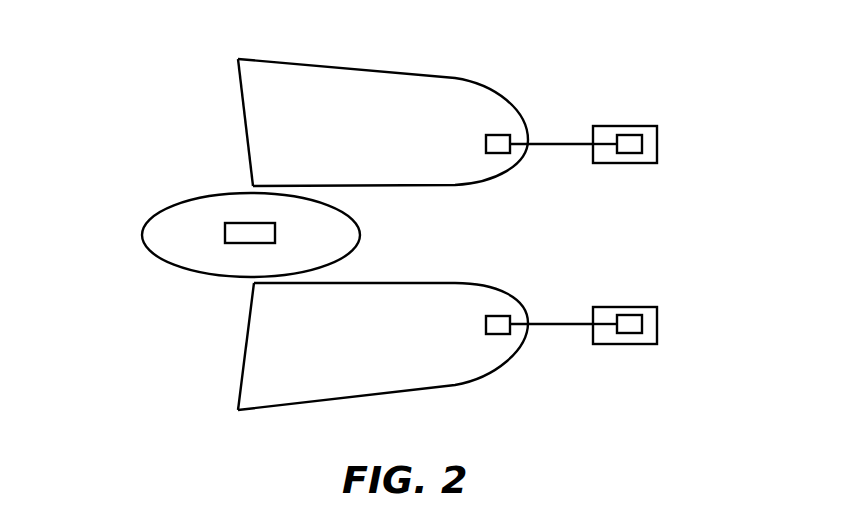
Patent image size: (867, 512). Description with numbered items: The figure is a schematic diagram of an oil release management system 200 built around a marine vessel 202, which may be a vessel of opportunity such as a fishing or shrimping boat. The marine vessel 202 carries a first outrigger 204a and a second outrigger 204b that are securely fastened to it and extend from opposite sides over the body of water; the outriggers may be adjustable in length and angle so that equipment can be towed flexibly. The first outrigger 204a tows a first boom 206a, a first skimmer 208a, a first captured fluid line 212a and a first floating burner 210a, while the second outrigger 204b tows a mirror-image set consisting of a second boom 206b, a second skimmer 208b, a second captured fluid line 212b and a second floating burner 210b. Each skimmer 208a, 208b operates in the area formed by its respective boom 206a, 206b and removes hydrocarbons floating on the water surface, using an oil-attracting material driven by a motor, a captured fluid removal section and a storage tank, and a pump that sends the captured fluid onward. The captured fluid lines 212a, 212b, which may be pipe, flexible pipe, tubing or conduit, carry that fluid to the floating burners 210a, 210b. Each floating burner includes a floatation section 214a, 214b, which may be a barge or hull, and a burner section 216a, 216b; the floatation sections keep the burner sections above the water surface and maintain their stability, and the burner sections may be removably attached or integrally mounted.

The oil release management system 200 is at (126, 31).
The marine vessel 202 is at (164, 212).
The first outrigger 204a is at (237, 74).
The second outrigger 204b is at (237, 383).
The first boom 206a is at (432, 77).
The second boom 206b is at (410, 392).
The first skimmer 208a is at (486, 148).
The second skimmer 208b is at (486, 320).
The first floating burner 210a is at (659, 122).
The second floating burner 210b is at (659, 303).
The first captured fluid line 212a is at (559, 147).
The second captured fluid line 212b is at (559, 327).
The floatation section 214a is at (594, 128).
The floatation section 214b is at (594, 308).
The burner section 216a is at (636, 154).
The burner section 216b is at (636, 334).